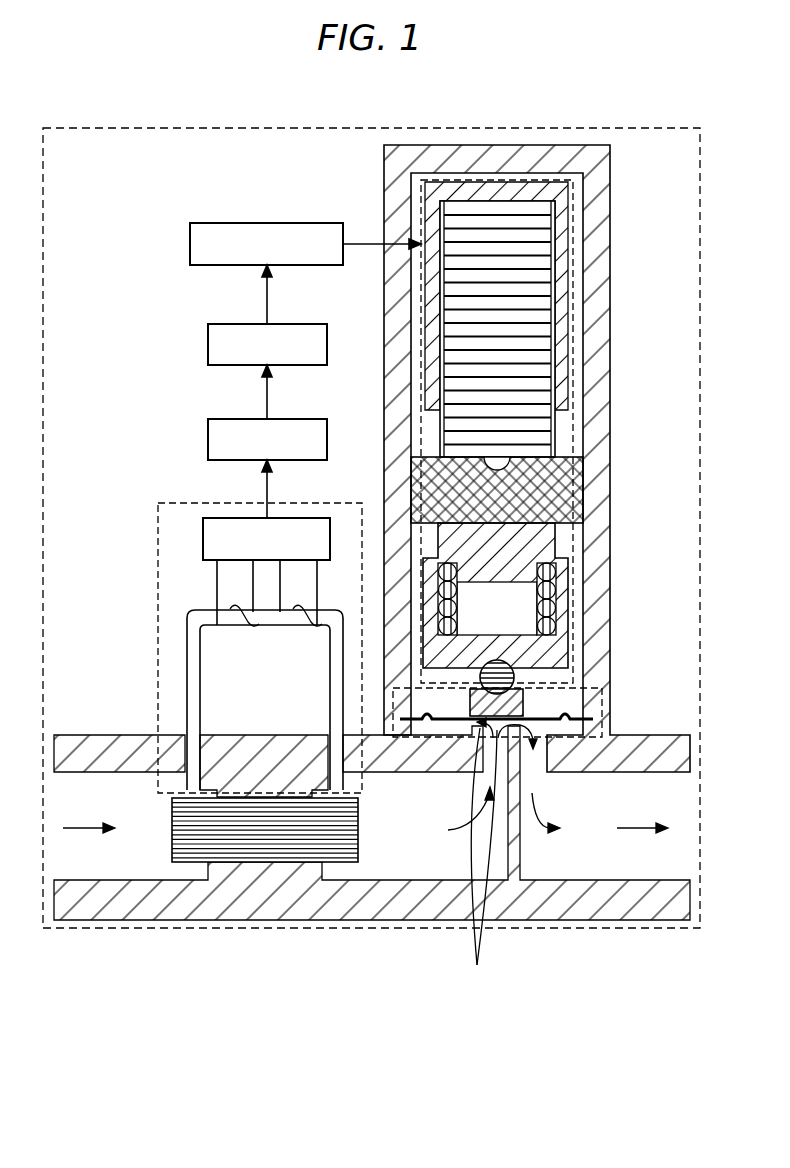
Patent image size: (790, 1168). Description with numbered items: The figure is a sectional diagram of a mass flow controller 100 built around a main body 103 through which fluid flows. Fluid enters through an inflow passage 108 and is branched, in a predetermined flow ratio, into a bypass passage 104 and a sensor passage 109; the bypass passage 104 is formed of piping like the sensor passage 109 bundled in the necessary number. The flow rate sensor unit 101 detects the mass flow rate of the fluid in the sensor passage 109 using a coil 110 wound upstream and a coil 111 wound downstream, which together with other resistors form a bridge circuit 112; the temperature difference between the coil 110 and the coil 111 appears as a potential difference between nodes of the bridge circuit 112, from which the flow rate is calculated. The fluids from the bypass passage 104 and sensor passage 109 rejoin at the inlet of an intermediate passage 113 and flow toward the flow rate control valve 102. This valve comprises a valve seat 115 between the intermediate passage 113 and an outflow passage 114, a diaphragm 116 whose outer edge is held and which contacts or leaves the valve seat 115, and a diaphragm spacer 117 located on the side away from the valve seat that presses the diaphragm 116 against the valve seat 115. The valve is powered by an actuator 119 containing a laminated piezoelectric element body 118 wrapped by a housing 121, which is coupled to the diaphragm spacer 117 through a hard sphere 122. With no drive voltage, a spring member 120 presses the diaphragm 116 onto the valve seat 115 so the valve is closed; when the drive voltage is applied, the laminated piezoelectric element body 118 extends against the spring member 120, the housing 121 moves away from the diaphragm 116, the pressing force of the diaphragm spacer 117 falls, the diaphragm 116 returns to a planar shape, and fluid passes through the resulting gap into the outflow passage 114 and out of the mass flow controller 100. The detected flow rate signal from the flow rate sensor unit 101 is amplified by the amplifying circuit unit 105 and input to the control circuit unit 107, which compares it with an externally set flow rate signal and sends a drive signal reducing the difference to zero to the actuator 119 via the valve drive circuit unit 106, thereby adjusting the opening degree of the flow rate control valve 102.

The mass flow controller 100 is at (565, 127).
The flow rate sensor unit 101 is at (158, 548).
The flow rate control valve 102 is at (578, 687).
The main body 103 is at (664, 905).
The bypass passage 104 is at (279, 848).
The amplifying circuit unit 105 is at (208, 440).
The valve drive circuit unit 106 is at (190, 243).
The control circuit unit 107 is at (208, 344).
The inflow passage 108 is at (146, 853).
The sensor passage 109 is at (187, 680).
The coil 110 is at (222, 628).
The coil 111 is at (287, 628).
The bridge circuit 112 is at (207, 543).
The intermediate passage 113 is at (417, 853).
The outflow passage 114 is at (605, 853).
The valve seat 115 is at (500, 853).
The diaphragm 116 is at (567, 721).
The diaphragm spacer 117 is at (510, 696).
The laminated piezoelectric element body 118 is at (540, 298).
The actuator 119 is at (585, 220).
The spring member 120 is at (553, 575).
The housing 121 is at (562, 368).
The hard sphere 122 is at (507, 668).